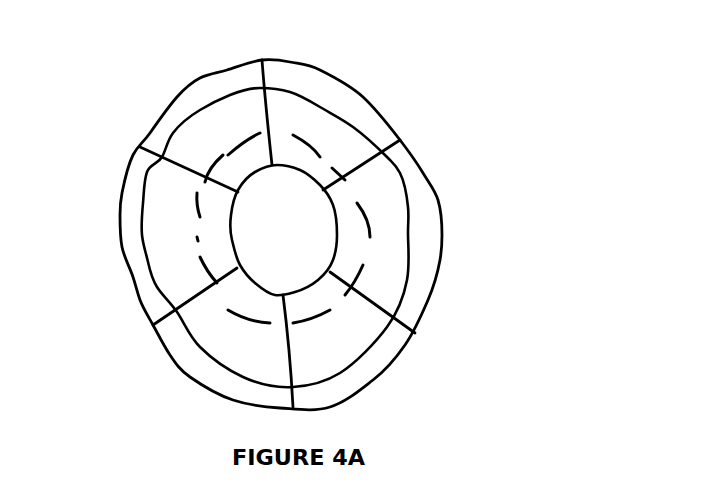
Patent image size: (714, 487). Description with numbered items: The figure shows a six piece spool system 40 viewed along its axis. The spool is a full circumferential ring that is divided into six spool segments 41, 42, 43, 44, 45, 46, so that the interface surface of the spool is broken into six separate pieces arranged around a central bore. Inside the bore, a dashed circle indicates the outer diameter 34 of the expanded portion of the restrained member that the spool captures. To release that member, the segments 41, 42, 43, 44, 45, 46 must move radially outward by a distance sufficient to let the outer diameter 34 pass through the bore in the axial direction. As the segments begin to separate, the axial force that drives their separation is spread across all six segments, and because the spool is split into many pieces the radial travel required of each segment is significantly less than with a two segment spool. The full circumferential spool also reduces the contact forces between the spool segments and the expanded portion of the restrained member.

The six piece spool system 40 is at (200, 78).
The spool segment 41 is at (167, 107).
The spool segment 42 is at (121, 247).
The spool segment 43 is at (190, 380).
The spool segment 44 is at (373, 380).
The spool segment 45 is at (438, 200).
The spool segment 46 is at (320, 72).
The outer diameter of the expanded portion of the restrained member 34 is at (360, 205).